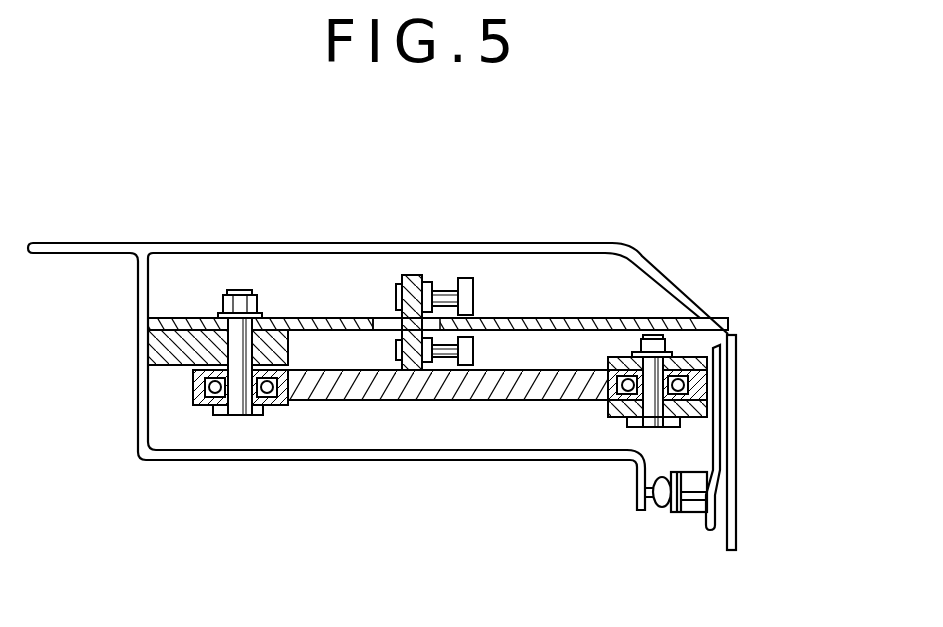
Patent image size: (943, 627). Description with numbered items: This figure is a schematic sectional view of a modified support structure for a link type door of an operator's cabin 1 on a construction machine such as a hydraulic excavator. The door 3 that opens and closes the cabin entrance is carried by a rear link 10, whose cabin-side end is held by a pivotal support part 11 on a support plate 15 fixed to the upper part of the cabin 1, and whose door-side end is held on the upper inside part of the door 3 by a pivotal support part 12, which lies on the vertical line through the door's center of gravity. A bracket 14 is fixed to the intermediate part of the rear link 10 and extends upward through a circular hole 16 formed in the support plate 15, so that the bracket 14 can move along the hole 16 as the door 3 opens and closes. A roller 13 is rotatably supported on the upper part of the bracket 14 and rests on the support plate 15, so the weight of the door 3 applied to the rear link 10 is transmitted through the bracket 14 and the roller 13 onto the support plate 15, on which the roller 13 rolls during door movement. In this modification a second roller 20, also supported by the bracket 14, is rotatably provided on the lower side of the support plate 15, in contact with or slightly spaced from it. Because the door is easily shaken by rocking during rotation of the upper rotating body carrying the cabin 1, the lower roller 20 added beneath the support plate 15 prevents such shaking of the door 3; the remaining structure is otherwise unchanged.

The operator's cabin 1 is at (648, 253).
The door 3 is at (736, 483).
The rear link 10 is at (550, 370).
The pivotal support part 11 is at (243, 290).
The pivotal support part 12 is at (650, 333).
The roller 13 is at (463, 280).
The bracket 14 is at (417, 275).
The support plate 15 is at (299, 318).
The hole 16 is at (392, 318).
The roller 20 is at (467, 340).